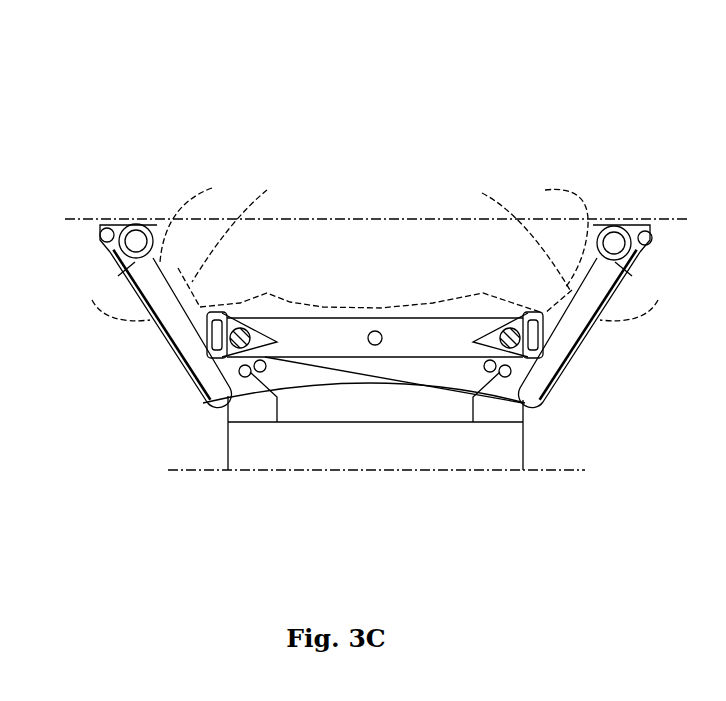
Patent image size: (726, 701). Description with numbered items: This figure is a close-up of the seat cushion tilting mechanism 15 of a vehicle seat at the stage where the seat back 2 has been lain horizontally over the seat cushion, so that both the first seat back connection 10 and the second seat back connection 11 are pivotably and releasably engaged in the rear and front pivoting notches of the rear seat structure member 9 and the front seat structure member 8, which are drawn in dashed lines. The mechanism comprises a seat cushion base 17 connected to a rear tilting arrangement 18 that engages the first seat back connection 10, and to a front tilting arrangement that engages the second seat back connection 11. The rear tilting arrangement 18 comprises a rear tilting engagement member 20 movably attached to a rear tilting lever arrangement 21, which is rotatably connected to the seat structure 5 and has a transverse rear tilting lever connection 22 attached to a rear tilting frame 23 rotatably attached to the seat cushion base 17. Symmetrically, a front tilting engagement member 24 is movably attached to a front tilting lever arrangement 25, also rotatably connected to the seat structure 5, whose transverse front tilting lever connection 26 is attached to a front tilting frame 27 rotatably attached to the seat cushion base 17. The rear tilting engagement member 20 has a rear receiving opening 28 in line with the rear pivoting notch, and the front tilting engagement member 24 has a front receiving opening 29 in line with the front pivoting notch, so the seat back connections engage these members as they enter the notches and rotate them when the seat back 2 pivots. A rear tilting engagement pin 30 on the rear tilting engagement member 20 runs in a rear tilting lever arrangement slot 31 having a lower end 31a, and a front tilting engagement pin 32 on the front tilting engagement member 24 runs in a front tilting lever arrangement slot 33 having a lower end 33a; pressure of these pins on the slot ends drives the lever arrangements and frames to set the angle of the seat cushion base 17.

The seat back 2 is at (360, 220).
The seat structure 5 is at (258, 447).
The front seat structure member 8 is at (367, 245).
The rear seat structure member 9 is at (516, 246).
The first seat back connection 10 is at (548, 232).
The second seat back connection 11 is at (200, 241).
The seat cushion tilting mechanism 15 is at (255, 100).
The seat cushion base 17 is at (400, 342).
The rear tilting arrangement 18 is at (153, 355).
The rear tilting engagement member 20 is at (648, 230).
The rear tilting lever arrangement 21 is at (598, 322).
The transverse rear tilting lever connection 22 is at (540, 402).
The rear tilting frame 23 is at (443, 377).
The front tilting engagement member 24 is at (104, 226).
The front tilting lever arrangement 25 is at (157, 325).
The transverse front tilting lever connection 26 is at (218, 393).
The front tilting frame 27 is at (303, 376).
The rear receiving opening 28 is at (614, 226).
The front receiving opening 29 is at (134, 224).
The rear tilting engagement pin 30 is at (653, 235).
The rear tilting lever arrangement slot 31 is at (632, 262).
The lower end of the rear tilting lever arrangement slot 31a is at (640, 270).
The front tilting engagement pin 32 is at (98, 234).
The front tilting lever arrangement slot 33 is at (118, 258).
The lower end of the front tilting lever arrangement slot 33a is at (137, 267).